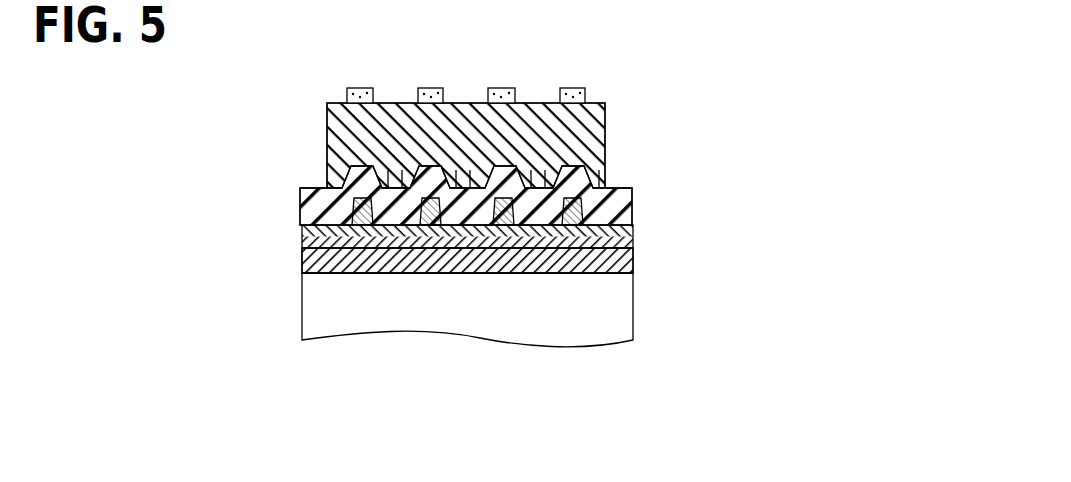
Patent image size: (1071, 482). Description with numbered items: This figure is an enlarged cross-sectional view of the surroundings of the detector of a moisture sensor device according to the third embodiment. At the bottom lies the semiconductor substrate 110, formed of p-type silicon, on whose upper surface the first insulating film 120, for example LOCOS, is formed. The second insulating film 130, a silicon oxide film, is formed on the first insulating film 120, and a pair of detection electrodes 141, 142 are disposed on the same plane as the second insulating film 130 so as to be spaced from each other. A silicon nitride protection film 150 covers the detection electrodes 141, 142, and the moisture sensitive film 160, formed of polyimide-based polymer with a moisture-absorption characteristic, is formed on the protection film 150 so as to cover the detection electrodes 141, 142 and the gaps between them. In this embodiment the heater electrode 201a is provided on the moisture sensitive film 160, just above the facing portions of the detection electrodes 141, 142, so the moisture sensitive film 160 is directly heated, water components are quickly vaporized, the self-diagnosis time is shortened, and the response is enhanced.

The semiconductor substrate 110 is at (618, 322).
The first insulating film 120 is at (633, 262).
The second insulating film 130 is at (633, 235).
The detection electrode 141 is at (362, 220).
The detection electrode 142 is at (430, 220).
The protection film 150 is at (632, 205).
The moisture sensitive film 160 is at (604, 138).
The heater electrode 201a is at (578, 88).